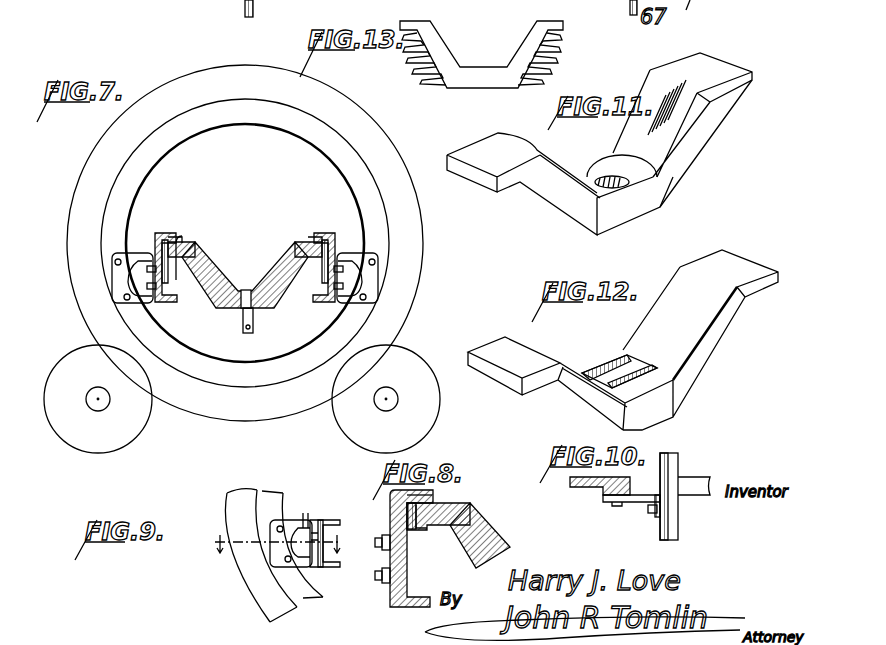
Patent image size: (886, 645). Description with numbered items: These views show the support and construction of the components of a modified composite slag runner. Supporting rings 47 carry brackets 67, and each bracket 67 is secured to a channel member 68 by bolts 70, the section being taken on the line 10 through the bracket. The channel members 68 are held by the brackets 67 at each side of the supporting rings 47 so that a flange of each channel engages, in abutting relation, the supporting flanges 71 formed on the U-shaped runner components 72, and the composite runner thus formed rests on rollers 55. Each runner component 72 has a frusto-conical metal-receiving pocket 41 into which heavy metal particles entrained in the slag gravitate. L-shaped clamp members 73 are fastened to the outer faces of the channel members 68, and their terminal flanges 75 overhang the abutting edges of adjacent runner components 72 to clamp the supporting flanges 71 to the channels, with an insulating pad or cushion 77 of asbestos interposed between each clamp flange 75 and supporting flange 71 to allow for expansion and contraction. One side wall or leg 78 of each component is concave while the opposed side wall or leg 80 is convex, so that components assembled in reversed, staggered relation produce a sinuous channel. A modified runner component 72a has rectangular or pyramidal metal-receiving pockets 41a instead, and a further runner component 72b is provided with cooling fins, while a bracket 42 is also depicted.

In FIG. 9, the center line / section line 10 is at (278, 543).
In FIG. 7, the frusto-conical metal-receiving pocket 41 is at (247, 289).
In FIG. 11, the frusto-conical metal-receiving pocket 41 is at (637, 177).
In FIG. 12, the rectangular or pyramidal metal-receiving pocket 41a is at (658, 377).
In FIG. 7, the bracket 42 is at (243, 320).
In FIG. 7, the supporting ring 47 is at (87, 173).
In FIG. 9, the supporting ring 47 is at (240, 505).
In FIG. 10, the supporting ring 47 is at (606, 493).
In FIG. 7, the roller 55 is at (132, 430).
In FIG. 7, the bracket 67 is at (122, 280).
In FIG. 9, the bracket 67 is at (280, 548).
In FIG. 10, the bracket 67 is at (633, 502).
In FIG. 7, the channel member 68 is at (312, 292).
In FIG. 9, the channel member 68 is at (335, 510).
In FIG. 8, the channel member 68 is at (407, 607).
In FIG. 10, the channel member 68 is at (668, 463).
In FIG. 7, the bolt 70 is at (338, 254).
In FIG. 9, the bolt 70 is at (304, 512).
In FIG. 8, the bolt 70 is at (386, 583).
In FIG. 10, the bolt 70 is at (650, 512).
In FIG. 7, the supporting flange 71 is at (190, 240).
In FIG. 11, the supporting flange 71 is at (487, 173).
In FIG. 8, the supporting flange 71 is at (462, 507).
In FIG. 7, the runner component 72 is at (281, 310).
In FIG. 11, the runner component 72 is at (677, 157).
In FIG. 8, the runner component 72 is at (468, 550).
In FIG. 12, the modified runner component 72a is at (717, 338).
In FIG. 13, the runner component with cooling fins 72b is at (548, 45).
In FIG. 7, the L-shaped clamp member 73 is at (160, 237).
In FIG. 8, the L-shaped clamp member 73 is at (392, 517).
In FIG. 7, the terminal flange 75 is at (182, 232).
In FIG. 8, the terminal flange 75 is at (418, 532).
In FIG. 7, the insulating pad or cushion 77 is at (163, 234).
In FIG. 8, the insulating pad or cushion 77 is at (432, 498).
In FIG. 11, the side wall or leg 78 is at (677, 127).
In FIG. 13, the side wall or leg / cooling fins 80 is at (417, 53).
In FIG. 11, the side wall or leg / cooling fins 80 is at (540, 142).